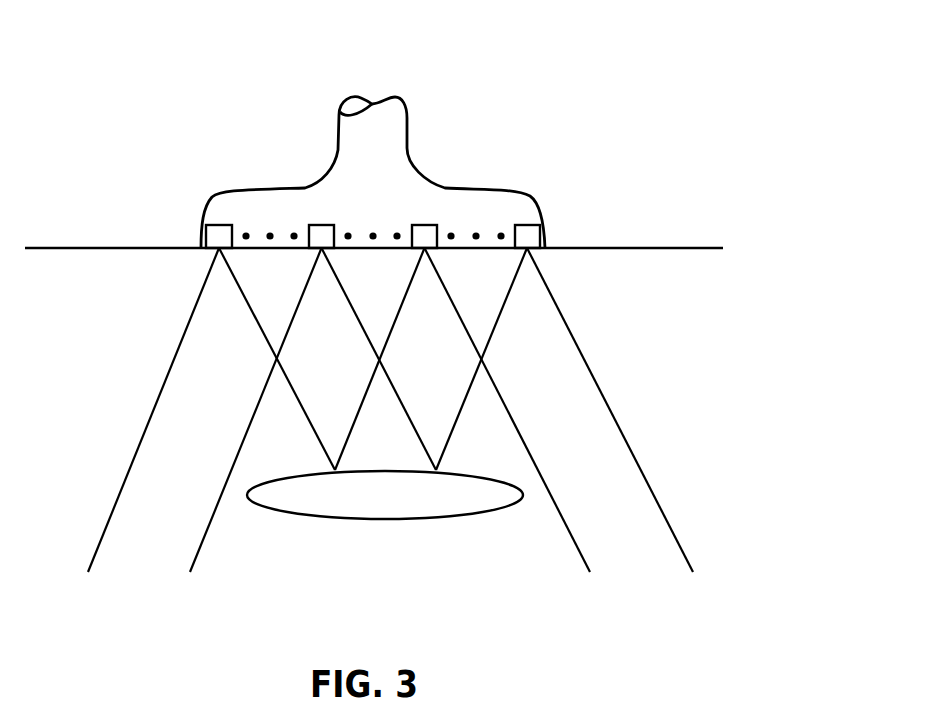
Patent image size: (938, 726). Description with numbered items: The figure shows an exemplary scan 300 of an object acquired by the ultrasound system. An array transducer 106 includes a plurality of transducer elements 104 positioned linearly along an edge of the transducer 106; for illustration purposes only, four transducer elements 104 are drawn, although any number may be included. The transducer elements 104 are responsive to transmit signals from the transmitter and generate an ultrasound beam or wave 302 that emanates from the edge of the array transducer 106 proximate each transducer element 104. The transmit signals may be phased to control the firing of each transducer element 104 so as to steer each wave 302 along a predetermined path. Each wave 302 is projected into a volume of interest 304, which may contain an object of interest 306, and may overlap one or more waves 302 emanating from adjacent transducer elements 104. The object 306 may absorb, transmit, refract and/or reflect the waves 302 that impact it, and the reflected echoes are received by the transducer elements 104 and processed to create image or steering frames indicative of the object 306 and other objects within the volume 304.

The scan 300 is at (133, 60).
The transducer elements 104 is at (552, 200).
The array transducer 106 is at (408, 136).
The ultrasound beam or wave 302 is at (307, 345).
The volume of interest 304 is at (772, 450).
The object of interest 306 is at (395, 515).